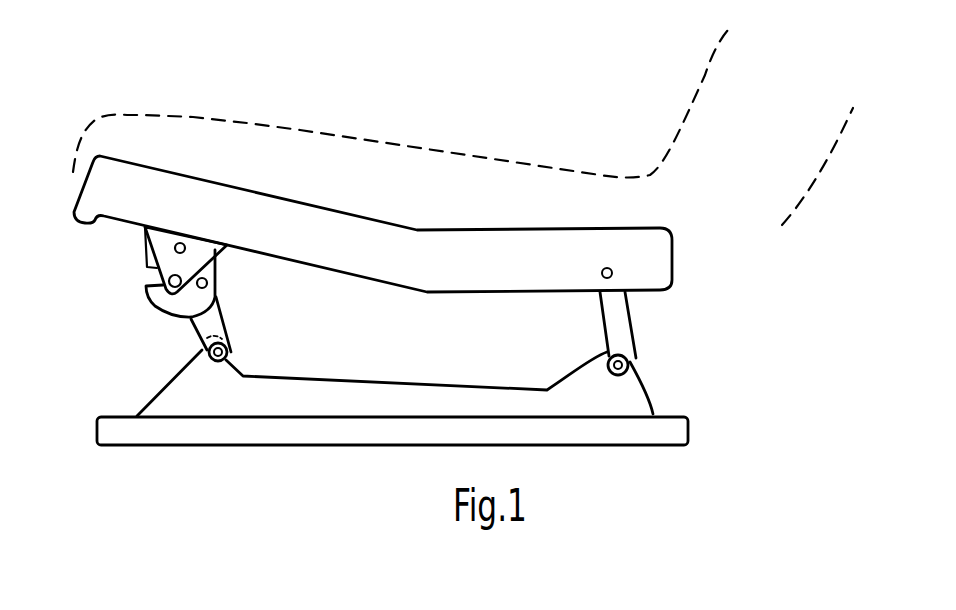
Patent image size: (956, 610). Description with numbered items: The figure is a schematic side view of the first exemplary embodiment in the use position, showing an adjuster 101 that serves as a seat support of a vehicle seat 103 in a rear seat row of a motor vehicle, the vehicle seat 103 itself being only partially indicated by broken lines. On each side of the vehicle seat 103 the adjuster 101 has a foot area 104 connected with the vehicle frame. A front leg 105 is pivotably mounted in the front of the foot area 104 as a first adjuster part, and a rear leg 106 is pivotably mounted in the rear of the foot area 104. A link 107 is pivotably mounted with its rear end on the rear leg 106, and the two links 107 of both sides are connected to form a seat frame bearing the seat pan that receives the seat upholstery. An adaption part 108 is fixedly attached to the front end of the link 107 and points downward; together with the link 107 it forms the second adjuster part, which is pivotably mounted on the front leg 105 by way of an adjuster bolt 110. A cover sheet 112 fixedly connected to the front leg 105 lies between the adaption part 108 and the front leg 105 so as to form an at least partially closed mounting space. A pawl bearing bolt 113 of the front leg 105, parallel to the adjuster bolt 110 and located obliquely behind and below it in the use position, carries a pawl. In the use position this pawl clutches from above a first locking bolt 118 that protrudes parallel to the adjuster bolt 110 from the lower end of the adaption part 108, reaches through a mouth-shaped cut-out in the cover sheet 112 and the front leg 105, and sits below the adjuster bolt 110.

The adjuster 101 is at (122, 338).
The vehicle seat 103 is at (463, 107).
The foot area 104 is at (258, 398).
The front leg 105 is at (222, 324).
The rear leg 106 is at (620, 328).
The link 107 is at (442, 273).
The adaption part 108 is at (203, 252).
The adjuster bolt 110 is at (177, 252).
The cover sheet 112 is at (180, 310).
The pawl bearing bolt 113 is at (208, 283).
The first locking bolt 118 is at (153, 283).